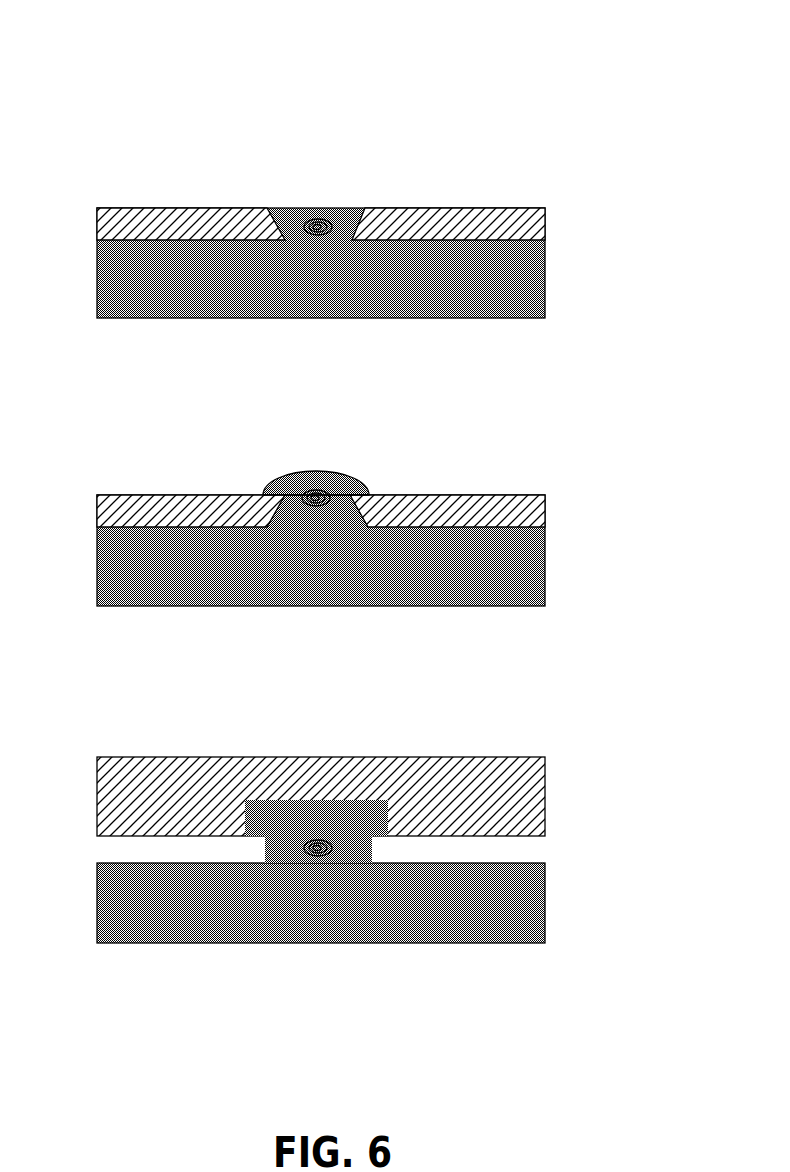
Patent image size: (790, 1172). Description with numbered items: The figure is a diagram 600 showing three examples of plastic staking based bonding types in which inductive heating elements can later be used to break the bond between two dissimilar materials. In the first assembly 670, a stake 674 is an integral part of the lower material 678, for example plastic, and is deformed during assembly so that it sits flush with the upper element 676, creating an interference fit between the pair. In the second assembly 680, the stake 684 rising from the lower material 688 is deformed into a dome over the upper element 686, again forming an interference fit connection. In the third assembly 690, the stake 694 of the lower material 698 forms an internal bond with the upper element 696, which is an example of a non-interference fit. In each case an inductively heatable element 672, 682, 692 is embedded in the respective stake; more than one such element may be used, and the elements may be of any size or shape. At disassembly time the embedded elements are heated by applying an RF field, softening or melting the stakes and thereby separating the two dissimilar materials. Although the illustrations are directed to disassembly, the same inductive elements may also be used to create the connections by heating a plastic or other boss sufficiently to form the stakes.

The diagram 600 is at (572, 72).
The assembly 670 is at (123, 151).
The inductively heatable element 672 is at (316, 210).
The stake 674 is at (359, 195).
The upper element 676 is at (548, 206).
The lower material 678 is at (548, 296).
The assembly 680 is at (123, 459).
The inductively heatable element 682 is at (307, 486).
The stake 684 is at (350, 470).
The upper element 686 is at (548, 493).
The lower material 688 is at (548, 586).
The assembly 690 is at (123, 719).
The inductively heatable element 692 is at (307, 829).
The stake 694 is at (362, 829).
The upper element 696 is at (548, 770).
The lower material 698 is at (548, 866).